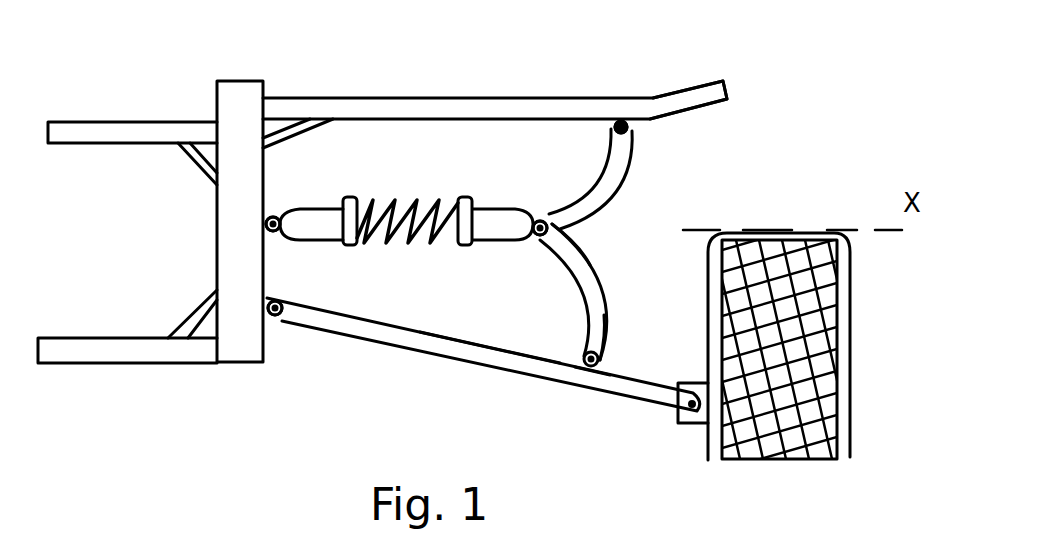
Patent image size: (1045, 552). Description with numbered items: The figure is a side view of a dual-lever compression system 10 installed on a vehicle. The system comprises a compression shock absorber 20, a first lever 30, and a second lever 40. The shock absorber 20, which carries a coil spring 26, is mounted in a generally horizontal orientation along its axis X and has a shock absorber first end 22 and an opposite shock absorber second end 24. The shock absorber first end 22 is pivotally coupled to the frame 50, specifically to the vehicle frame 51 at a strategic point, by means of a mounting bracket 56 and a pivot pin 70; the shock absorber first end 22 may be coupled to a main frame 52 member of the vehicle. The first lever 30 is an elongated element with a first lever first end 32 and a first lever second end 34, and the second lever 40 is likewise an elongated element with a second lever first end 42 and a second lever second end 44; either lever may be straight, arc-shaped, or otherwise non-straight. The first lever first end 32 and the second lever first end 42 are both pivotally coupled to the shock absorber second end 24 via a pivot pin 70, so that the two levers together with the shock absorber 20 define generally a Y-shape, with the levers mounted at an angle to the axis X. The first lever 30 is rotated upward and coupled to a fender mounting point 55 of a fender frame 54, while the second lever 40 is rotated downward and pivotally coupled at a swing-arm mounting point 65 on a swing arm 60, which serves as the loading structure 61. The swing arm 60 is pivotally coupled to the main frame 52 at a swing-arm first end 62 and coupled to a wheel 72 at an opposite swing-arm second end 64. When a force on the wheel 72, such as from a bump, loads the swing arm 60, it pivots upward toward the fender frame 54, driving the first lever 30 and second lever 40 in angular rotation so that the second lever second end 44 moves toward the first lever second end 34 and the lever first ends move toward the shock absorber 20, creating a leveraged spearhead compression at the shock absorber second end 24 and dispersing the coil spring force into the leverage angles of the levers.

The dual-lever compression system 10 is at (433, 382).
The compression shock absorber 20 is at (390, 270).
The shock absorber first end 22 is at (298, 209).
The shock absorber second end 24 is at (503, 208).
The coil spring 26 is at (407, 200).
The first lever 30 is at (613, 182).
The first lever first end 32 is at (546, 218).
The first lever second end 34 is at (609, 136).
The second lever 40 is at (598, 293).
The second lever first end 42 is at (568, 228).
The second lever second end 44 is at (607, 323).
The frame 50 is at (215, 223).
The vehicle frame 51 is at (230, 205).
The main frame 52 is at (212, 250).
The fender frame 54 is at (583, 98).
The fender mounting point 55 is at (638, 123).
The mounting bracket 56 is at (276, 217).
The swing arm 60 is at (613, 400).
The loading structure 61 is at (517, 378).
The swing-arm first end 62 is at (282, 325).
The swing-arm second end 64 is at (653, 407).
The swing-arm mounting point 65 is at (597, 370).
The pivot pin 70 is at (630, 130).
The wheel 72 is at (850, 390).